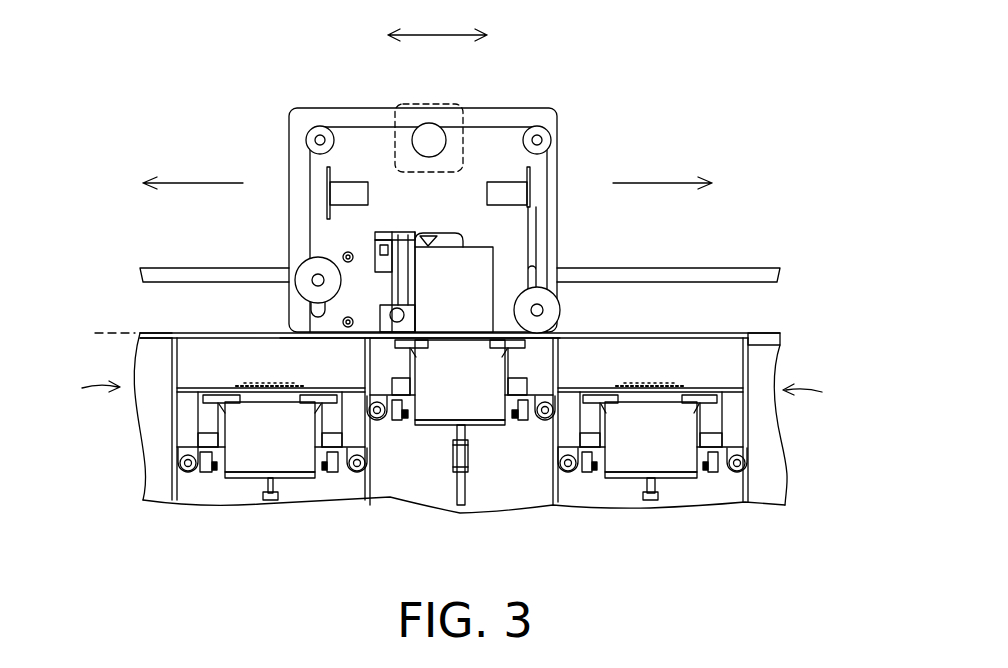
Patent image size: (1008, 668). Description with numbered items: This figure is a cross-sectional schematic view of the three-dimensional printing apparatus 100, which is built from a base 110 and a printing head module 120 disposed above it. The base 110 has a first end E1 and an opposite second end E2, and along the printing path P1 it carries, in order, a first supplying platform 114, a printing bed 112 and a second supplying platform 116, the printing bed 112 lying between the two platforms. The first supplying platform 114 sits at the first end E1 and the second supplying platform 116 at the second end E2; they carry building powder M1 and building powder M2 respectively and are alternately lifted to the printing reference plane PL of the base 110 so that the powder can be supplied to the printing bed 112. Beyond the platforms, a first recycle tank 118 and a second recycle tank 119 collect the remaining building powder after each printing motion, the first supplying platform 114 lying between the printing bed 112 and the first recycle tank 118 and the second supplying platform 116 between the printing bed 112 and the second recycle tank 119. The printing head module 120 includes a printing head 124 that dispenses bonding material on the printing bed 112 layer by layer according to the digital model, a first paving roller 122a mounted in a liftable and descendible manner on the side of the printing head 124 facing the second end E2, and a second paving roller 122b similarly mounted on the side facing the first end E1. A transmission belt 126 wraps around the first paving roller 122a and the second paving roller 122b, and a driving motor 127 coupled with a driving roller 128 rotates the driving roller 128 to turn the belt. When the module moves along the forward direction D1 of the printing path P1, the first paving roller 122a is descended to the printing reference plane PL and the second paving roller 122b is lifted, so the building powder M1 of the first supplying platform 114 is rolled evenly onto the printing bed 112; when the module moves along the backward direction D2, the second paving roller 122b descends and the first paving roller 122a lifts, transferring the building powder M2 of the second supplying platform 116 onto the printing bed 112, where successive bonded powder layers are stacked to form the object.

The 3-D printing apparatus 100 is at (853, 567).
The base 110 is at (785, 442).
The printing bed 112 is at (567, 333).
The first supplying platform 114 is at (188, 375).
The second supplying platform 116 is at (730, 380).
The first recycle tank 118 is at (140, 428).
The second recycle tank 119 is at (770, 352).
The printing head module 120 is at (558, 161).
The first paving roller 122a is at (551, 298).
The second paving roller 122b is at (303, 278).
The printing head 124 is at (477, 257).
The transmission belt 126 is at (497, 127).
The driving motor 127 is at (398, 152).
The driving roller 128 is at (429, 132).
The building powder M1 is at (265, 380).
The building powder M2 is at (653, 380).
The printing path P1 is at (437, 20).
The forward direction D1 is at (662, 167).
The backward direction D2 is at (193, 167).
The printing reference plane PL is at (96, 332).
The first end E1 is at (86, 390).
The second end E2 is at (815, 395).